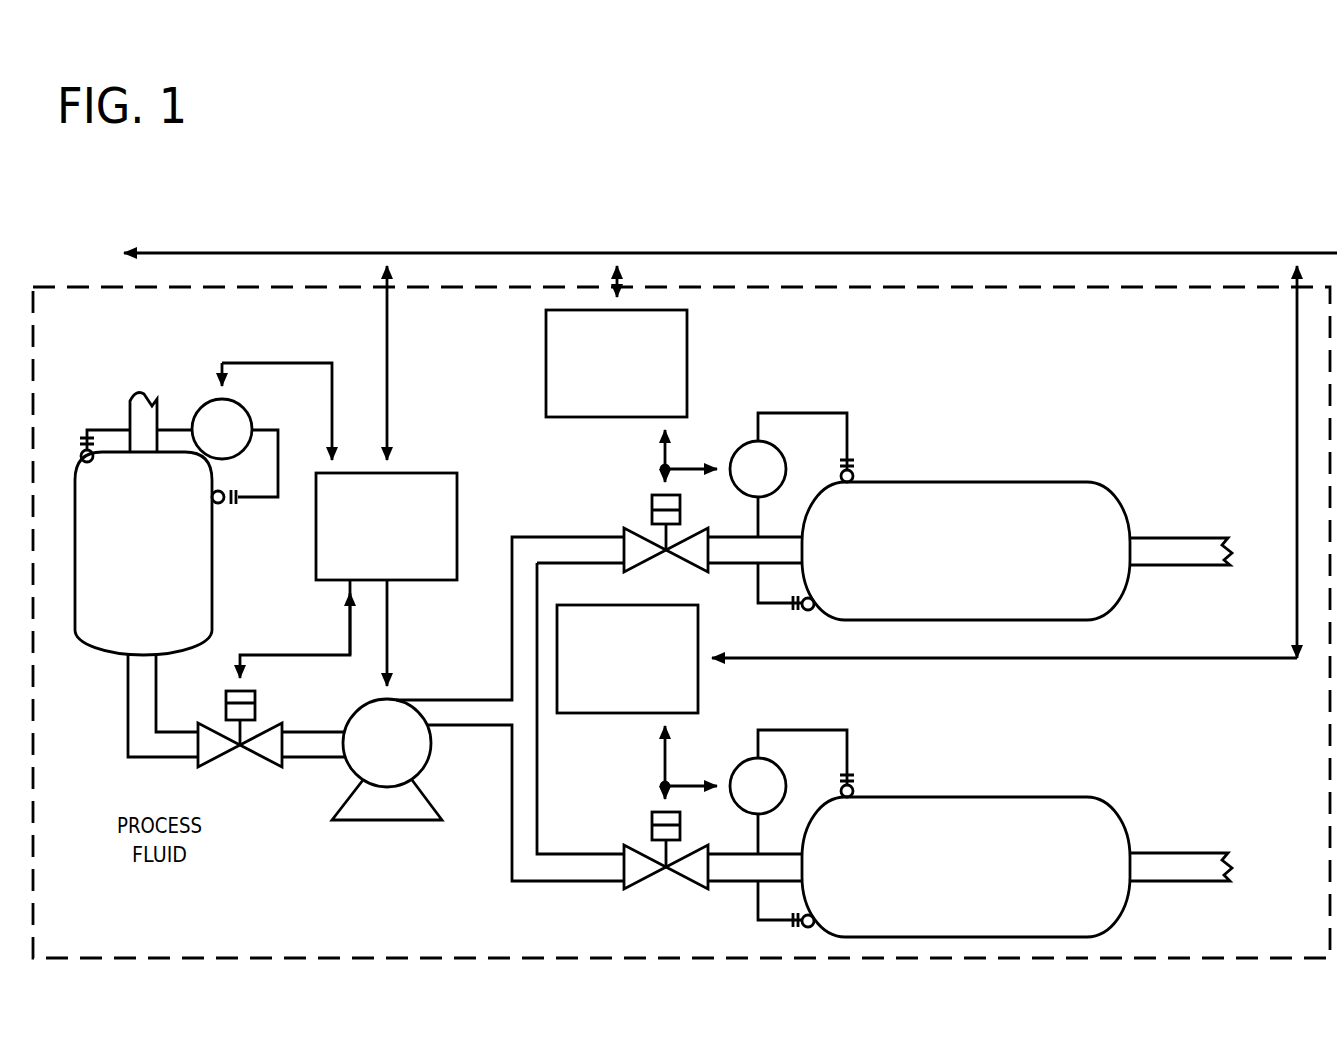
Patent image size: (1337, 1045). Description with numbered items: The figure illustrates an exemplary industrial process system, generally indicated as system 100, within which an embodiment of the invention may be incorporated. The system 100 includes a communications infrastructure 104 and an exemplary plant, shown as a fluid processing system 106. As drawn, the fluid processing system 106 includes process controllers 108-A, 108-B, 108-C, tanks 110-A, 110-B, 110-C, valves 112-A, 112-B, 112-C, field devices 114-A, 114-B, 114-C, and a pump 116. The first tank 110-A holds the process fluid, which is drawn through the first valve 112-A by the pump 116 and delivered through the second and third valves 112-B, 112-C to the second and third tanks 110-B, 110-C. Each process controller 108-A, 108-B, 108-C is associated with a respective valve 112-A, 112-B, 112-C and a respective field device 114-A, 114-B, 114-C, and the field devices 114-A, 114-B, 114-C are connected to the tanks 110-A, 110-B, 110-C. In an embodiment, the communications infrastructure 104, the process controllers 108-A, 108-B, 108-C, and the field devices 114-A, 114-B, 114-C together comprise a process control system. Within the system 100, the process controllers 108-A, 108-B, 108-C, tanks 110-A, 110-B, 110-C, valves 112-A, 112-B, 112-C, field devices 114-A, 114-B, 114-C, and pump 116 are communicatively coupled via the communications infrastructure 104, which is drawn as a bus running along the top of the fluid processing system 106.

The system 100 is at (814, 190).
The communications infrastructure 104 is at (270, 252).
The fluid processing system 106 is at (78, 287).
The process controller 108-A is at (462, 478).
The process controller 108-B is at (690, 346).
The process controller 108-C is at (595, 714).
The tank 110-A is at (191, 575).
The tank 110-B is at (990, 482).
The tank 110-C is at (990, 797).
The valve 112-A is at (258, 703).
The valve 112-B is at (652, 506).
The valve 112-C is at (652, 822).
The field device 114-A is at (196, 410).
The field device 114-B is at (742, 447).
The field device 114-C is at (745, 762).
The pump 116 is at (383, 821).